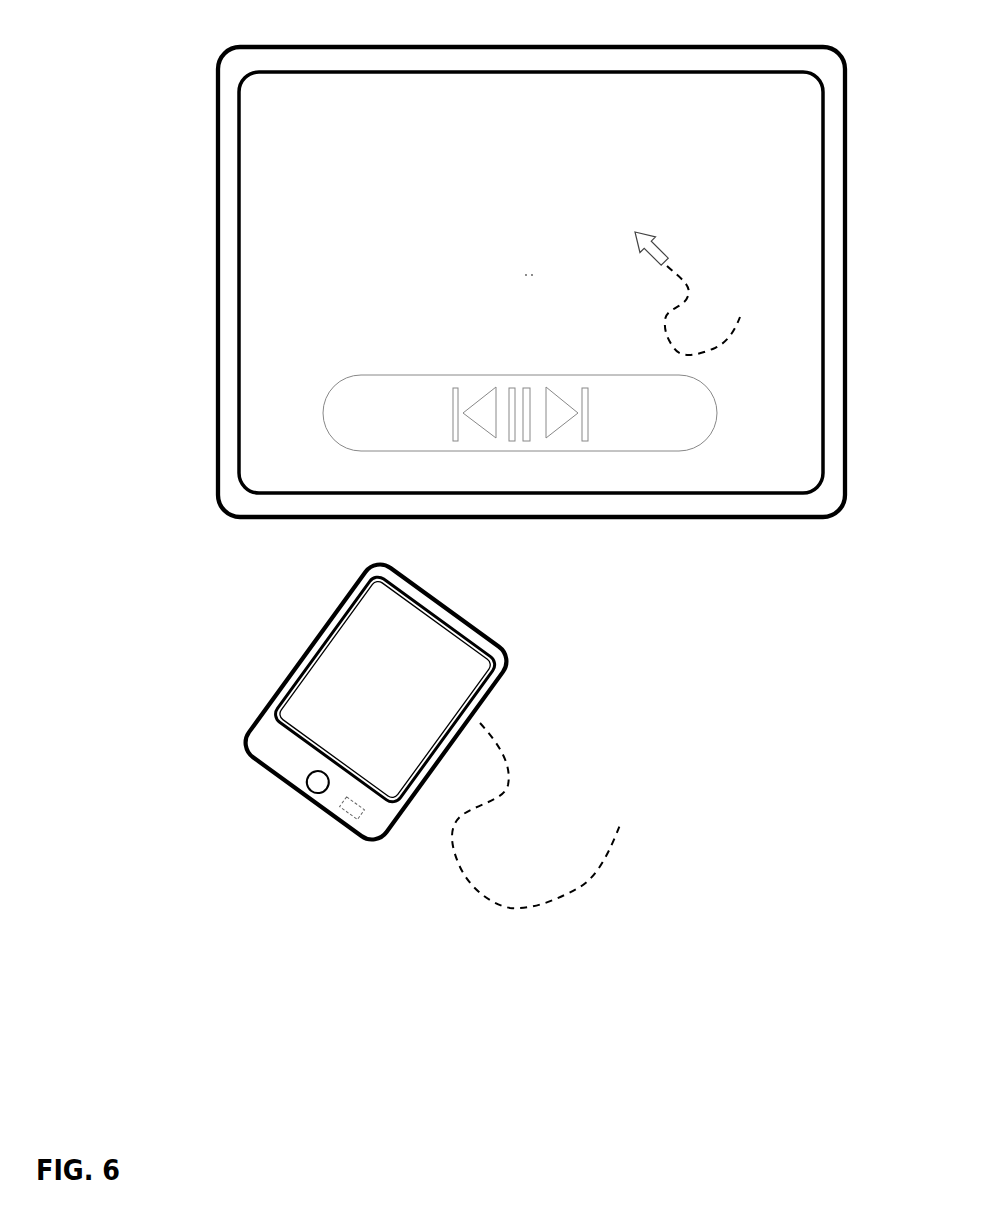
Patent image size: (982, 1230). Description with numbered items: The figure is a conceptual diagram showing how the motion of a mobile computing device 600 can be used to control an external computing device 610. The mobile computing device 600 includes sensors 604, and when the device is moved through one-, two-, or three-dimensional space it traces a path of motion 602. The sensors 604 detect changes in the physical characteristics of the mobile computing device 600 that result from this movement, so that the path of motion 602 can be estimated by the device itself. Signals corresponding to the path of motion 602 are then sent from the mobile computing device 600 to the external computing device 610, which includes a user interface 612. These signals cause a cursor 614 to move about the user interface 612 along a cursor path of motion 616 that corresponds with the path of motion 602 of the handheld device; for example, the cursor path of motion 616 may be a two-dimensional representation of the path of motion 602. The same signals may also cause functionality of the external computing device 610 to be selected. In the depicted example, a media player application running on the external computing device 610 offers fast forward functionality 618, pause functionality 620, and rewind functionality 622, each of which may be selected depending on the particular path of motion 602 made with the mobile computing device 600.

The mobile computing device 600 is at (320, 631).
The path of motion 602 is at (585, 877).
The sensors 604 is at (351, 816).
The external computing device 610 is at (443, 45).
The user interface 612 is at (239, 199).
The cursor 614 is at (656, 245).
The cursor path of motion 616 is at (727, 342).
The fast forward functionality 618 is at (557, 392).
The pause functionality 620 is at (522, 437).
The rewind functionality 622 is at (477, 402).